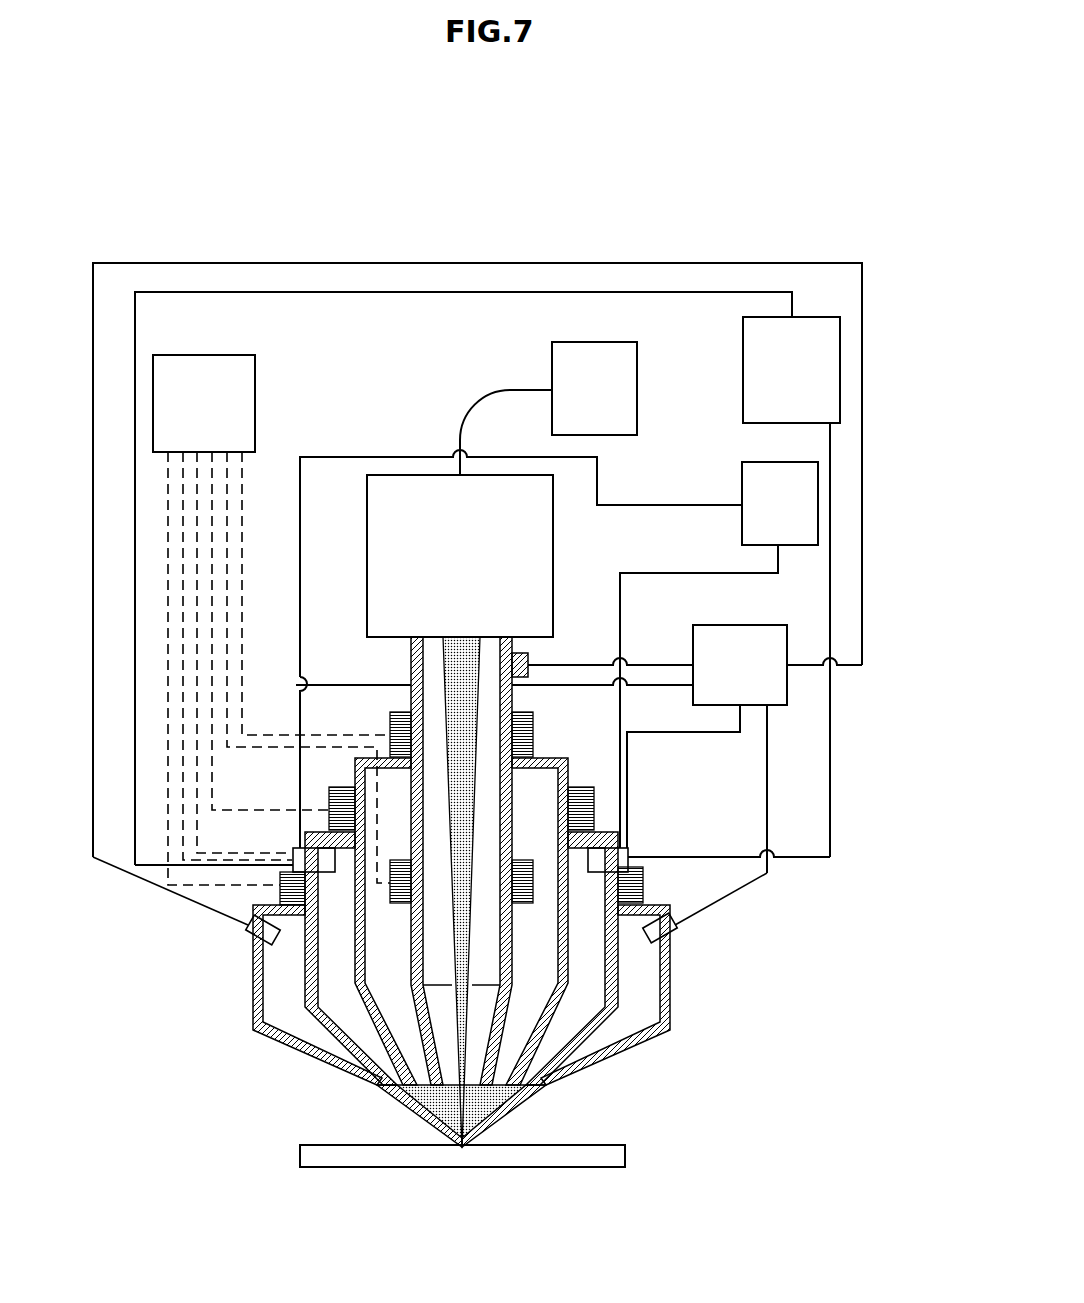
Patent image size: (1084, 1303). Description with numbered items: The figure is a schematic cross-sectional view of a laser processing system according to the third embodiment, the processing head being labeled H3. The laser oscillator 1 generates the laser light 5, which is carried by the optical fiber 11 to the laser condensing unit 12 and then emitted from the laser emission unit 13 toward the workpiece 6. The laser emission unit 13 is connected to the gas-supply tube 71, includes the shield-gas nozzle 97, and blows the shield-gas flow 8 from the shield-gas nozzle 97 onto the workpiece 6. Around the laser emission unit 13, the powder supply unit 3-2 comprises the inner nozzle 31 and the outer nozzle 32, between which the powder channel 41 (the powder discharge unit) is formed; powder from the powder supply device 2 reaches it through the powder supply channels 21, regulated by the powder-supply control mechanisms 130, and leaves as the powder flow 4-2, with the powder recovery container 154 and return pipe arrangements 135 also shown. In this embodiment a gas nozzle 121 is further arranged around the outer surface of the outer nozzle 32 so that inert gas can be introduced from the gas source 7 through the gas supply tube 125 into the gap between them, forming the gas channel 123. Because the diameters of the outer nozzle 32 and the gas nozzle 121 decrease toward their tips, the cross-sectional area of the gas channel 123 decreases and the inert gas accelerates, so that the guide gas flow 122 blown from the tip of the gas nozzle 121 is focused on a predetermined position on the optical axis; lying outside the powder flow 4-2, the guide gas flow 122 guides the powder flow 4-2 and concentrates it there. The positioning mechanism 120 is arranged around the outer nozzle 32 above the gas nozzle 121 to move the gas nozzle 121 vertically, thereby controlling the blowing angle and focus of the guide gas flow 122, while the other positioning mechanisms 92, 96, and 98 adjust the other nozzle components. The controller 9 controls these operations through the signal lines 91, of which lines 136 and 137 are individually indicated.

The head H3 is at (600, 220).
The gas supply tube 125 is at (862, 350).
The powder recovery container 154 is at (743, 340).
The laser oscillator 1 is at (637, 372).
The optical fiber 11 is at (528, 390).
The controller 9 is at (255, 382).
The signal lines 91 is at (228, 487).
The electric wire 137 is at (183, 568).
The electric wire 136 is at (197, 608).
The laser condensing unit 12 is at (553, 532).
The powder supply channels 21 is at (612, 505).
The powder supply device 2 is at (742, 485).
The gas source 7 is at (780, 625).
The gas-supply tube 71 is at (580, 665).
The laser light 5 is at (448, 650).
The laser emission unit 13 is at (513, 783).
The positioning mechanism 92 is at (532, 735).
The positioning mechanism 96 is at (523, 860).
The inner nozzle 31 is at (568, 775).
The shield-gas nozzle 97 is at (560, 932).
The positioning mechanism 98 is at (329, 800).
The outer nozzle 32 is at (620, 957).
The powder-supply control mechanisms 130 is at (632, 855).
The positioning mechanism 120 is at (643, 875).
The powder channel 41 is at (330, 967).
The gas nozzle 121 is at (672, 993).
The gas channel 123 is at (633, 1027).
The powder flow 4-2 is at (520, 1097).
The guide gas flow 122 is at (515, 1115).
The powder supply unit 3-2 is at (245, 930).
The return pipe arrangements 135 is at (730, 857).
The workpiece 6 is at (303, 1145).
The shield-gas flow 8 is at (456, 1145).